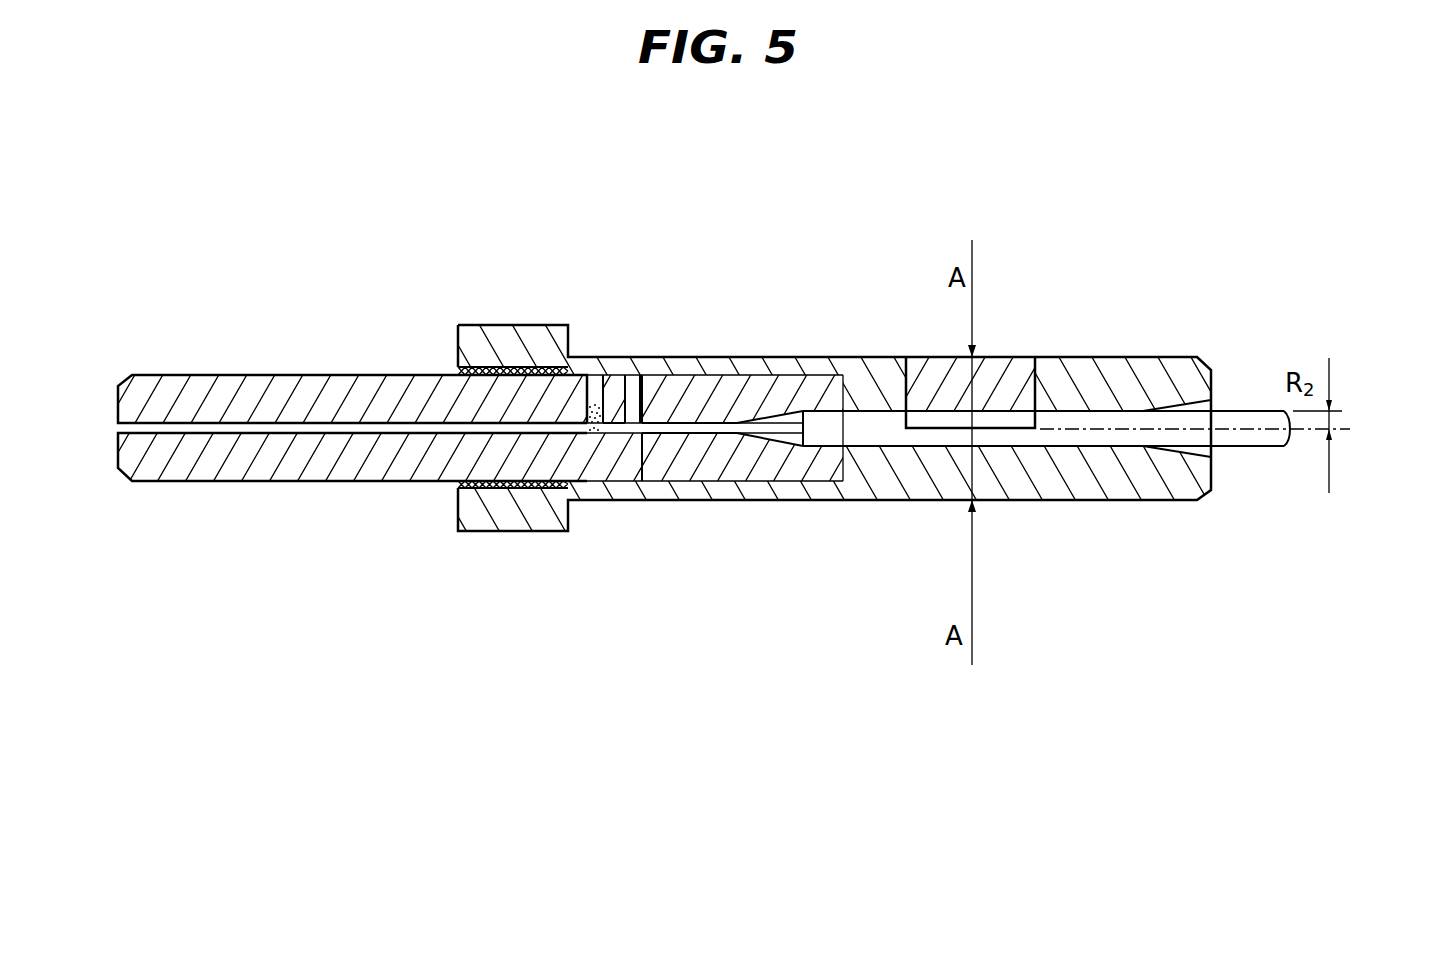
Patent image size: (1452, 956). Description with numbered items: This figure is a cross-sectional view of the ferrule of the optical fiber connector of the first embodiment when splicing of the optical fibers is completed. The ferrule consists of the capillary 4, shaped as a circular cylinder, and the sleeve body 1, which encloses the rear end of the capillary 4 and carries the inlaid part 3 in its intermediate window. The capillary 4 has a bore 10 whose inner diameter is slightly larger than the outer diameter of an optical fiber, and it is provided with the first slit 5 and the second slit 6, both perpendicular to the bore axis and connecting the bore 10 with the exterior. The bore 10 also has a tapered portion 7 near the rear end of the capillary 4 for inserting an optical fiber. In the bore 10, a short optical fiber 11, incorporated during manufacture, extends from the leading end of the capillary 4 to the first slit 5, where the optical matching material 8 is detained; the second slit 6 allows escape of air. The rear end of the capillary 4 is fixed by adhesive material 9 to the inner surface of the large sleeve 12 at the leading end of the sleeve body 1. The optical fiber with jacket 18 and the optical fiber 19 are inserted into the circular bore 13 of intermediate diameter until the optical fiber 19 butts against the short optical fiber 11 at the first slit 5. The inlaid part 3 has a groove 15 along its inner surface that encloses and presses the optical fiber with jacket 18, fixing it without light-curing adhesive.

The sleeve body 1 is at (913, 483).
The inlaid part 3 is at (1012, 357).
The capillary 4 is at (214, 384).
The first slit 5 is at (593, 387).
The second slit 6 is at (632, 387).
The tapered portion 7 is at (745, 440).
The optical matching material 8 is at (597, 428).
The adhesive material 9 is at (457, 485).
The bore 10 is at (330, 435).
The short optical fiber 11 is at (247, 431).
The large sleeve 12 is at (717, 357).
The bore with intermediate diameter 13 is at (1090, 447).
The groove 15 is at (947, 413).
The optical fiber with jacket 18 is at (1248, 411).
The optical fiber 19 is at (780, 420).